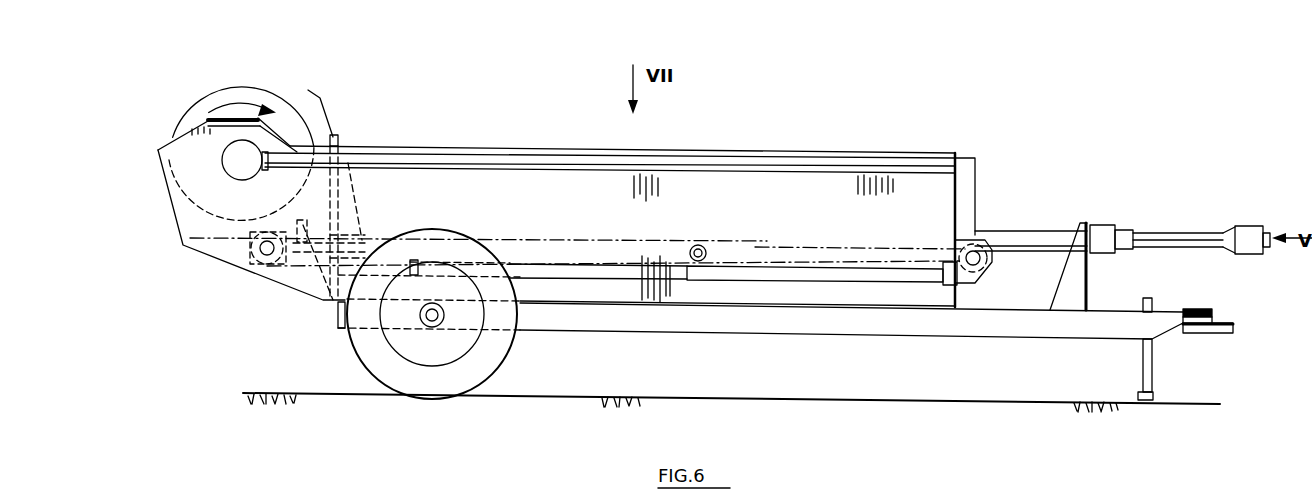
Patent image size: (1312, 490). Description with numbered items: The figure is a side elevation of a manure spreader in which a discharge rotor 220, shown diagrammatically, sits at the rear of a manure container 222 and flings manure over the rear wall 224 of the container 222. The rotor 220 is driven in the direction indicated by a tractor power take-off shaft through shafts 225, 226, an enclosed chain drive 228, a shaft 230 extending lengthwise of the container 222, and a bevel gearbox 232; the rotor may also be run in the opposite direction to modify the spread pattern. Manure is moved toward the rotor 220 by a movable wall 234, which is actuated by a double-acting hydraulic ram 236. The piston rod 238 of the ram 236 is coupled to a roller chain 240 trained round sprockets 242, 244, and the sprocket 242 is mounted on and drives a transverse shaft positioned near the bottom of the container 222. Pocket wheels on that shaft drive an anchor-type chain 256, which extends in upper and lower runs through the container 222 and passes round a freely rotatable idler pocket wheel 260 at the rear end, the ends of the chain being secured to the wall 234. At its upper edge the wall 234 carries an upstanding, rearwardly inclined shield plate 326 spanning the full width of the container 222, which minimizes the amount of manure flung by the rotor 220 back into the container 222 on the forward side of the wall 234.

The discharge rotor 220 is at (243, 88).
The manure container 222 is at (720, 182).
The rear wall 224 is at (156, 168).
The shaft 225 is at (1185, 232).
The shaft 226 is at (1003, 232).
The enclosed chain drive 228 is at (980, 163).
The shaft 230 is at (902, 172).
The bevel gearbox 232 is at (238, 178).
The movable wall 234 is at (340, 133).
The double-acting hydraulic ram 236 is at (603, 272).
The piston rod 238 is at (805, 279).
The roller chain 240 is at (757, 245).
The sprocket 242 is at (997, 262).
The sprocket 244 is at (690, 244).
The anchor-type chain 256 is at (550, 236).
The idler pocket wheel 260 is at (262, 268).
The shield plate 326 is at (324, 100).